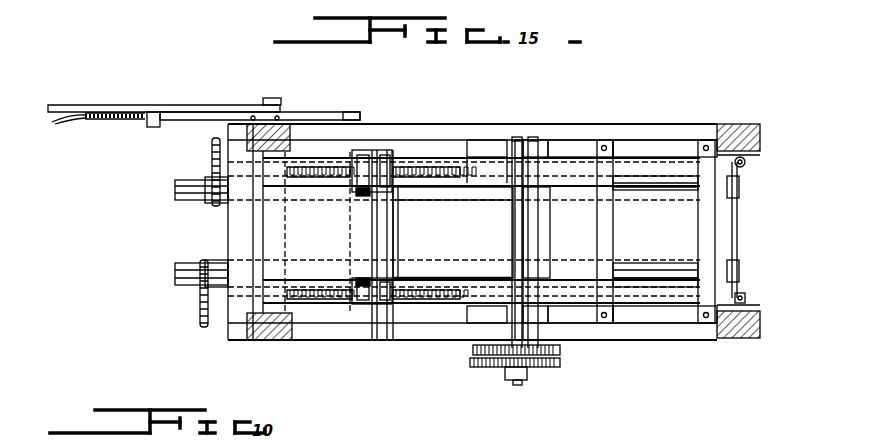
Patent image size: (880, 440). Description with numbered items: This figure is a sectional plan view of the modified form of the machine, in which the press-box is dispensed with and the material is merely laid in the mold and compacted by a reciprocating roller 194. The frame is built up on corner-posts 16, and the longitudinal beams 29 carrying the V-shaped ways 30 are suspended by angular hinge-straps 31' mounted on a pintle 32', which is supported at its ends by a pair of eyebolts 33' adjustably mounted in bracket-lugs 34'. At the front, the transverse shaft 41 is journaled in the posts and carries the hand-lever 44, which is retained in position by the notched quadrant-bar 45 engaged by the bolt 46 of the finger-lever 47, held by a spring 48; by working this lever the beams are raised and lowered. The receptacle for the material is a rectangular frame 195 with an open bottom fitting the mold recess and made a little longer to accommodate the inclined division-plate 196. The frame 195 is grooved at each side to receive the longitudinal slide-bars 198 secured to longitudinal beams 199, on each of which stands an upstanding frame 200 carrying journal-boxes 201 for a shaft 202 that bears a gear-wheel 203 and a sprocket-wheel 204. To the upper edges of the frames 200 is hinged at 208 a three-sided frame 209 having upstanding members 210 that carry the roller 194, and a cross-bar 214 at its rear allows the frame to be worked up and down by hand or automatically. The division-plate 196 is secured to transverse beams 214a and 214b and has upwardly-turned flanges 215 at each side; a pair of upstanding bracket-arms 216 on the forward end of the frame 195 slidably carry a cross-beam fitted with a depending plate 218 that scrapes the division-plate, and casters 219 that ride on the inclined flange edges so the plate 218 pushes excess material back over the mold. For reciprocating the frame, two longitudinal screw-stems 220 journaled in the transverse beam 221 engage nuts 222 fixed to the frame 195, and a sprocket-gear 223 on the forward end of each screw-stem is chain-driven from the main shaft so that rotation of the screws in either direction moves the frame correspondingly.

The corner-post 16 is at (285, 125).
The longitudinal beam 29 is at (183, 205).
The V-shaped way 30 is at (175, 192).
The angular hinge-strap 31' is at (755, 229).
The pintle 32' is at (753, 230).
The eyebolt 33' is at (771, 232).
The bracket-lug 34' is at (767, 227).
The transverse shaft 41 is at (270, 98).
The hand-lever 44 is at (198, 108).
The notched quadrant-bar 45 is at (348, 112).
The bolt 46 is at (153, 112).
The finger-lever 47 is at (70, 124).
The spring 48 is at (118, 121).
The reciprocating roller 194 is at (548, 236).
The rectangular frame 195 is at (590, 255).
The inclined division-plate 196 is at (453, 232).
The longitudinal slide-bar 198 is at (655, 193).
The longitudinal beam 199 is at (640, 126).
The upstanding frame 200 is at (482, 148).
The journal-box 201 is at (515, 240).
The shaft 202 is at (518, 137).
The gear-wheel 203 is at (500, 365).
The sprocket-wheel 204 is at (548, 367).
The hinge 208 is at (537, 142).
The three-sided frame 209 is at (680, 148).
The upstanding member 210 is at (565, 148).
The cross-bar 214 is at (706, 235).
The transverse beam 214a is at (285, 160).
The transverse beam 214b is at (263, 240).
The upwardly-turned flange 215 is at (455, 170).
The upstanding bracket-arm 216 is at (398, 160).
The depending plate 218 is at (398, 240).
The caster 219 is at (352, 192).
The longitudinal screw-stem 220 is at (440, 165).
The transverse beam 221 is at (240, 240).
The nut 222 is at (361, 236).
The sprocket-gear 223 is at (212, 160).